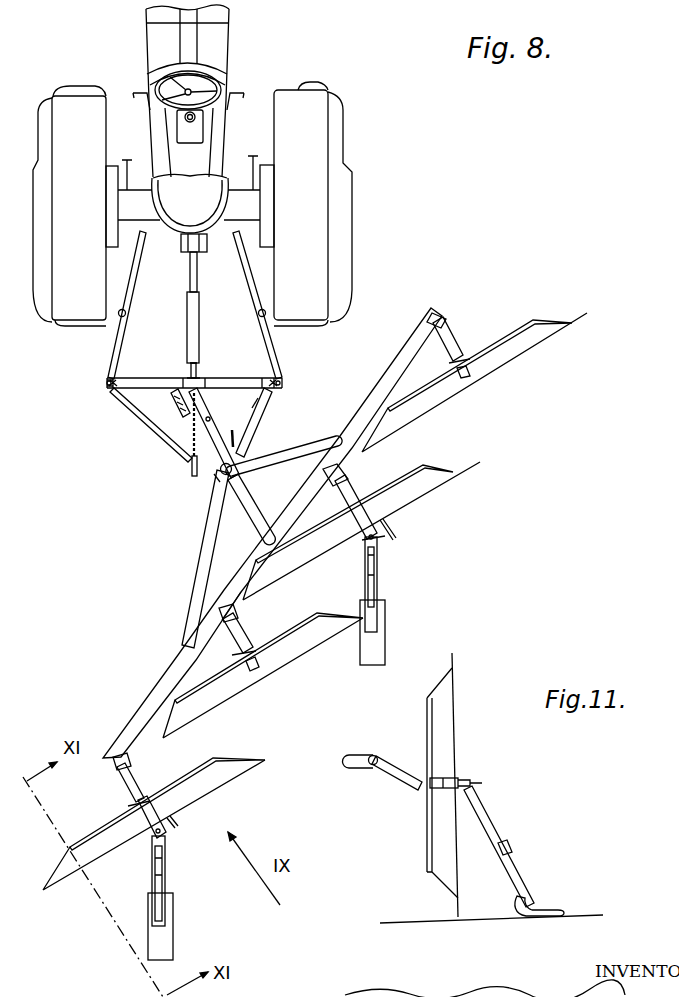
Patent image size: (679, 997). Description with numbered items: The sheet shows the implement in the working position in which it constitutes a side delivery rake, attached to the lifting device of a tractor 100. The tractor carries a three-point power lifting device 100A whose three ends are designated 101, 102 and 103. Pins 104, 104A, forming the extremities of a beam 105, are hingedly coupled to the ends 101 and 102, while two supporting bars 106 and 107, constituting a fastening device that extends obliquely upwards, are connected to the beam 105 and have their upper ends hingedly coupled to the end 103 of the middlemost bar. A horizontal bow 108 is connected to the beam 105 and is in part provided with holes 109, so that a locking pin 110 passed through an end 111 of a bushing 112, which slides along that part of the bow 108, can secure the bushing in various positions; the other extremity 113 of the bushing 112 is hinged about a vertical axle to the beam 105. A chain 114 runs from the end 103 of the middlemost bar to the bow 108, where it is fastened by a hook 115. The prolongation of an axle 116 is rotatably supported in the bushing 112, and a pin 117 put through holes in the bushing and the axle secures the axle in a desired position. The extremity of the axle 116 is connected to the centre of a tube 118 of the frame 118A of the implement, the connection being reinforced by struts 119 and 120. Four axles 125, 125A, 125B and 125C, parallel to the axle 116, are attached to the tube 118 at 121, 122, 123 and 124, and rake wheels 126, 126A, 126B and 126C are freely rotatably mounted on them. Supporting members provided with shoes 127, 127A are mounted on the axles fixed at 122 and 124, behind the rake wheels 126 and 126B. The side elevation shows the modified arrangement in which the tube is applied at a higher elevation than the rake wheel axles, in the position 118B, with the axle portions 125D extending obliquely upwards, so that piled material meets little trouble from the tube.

In FIG. 8, the tractor 100 is at (214, 42).
In FIG. 8, the three-point power lifting device 100A is at (184, 319).
In FIG. 8, the end of lifting device 101 is at (107, 390).
In FIG. 8, the end of lifting device 102 is at (283, 388).
In FIG. 8, the end of middlemost bar 103 is at (200, 366).
In FIG. 8, the pin 104 is at (106, 382).
In FIG. 8, the pin 104A is at (284, 380).
In FIG. 8, the beam 105 is at (112, 378).
In FIG. 8, the supporting bar 106 is at (172, 383).
In FIG. 8, the supporting bar 107 is at (214, 416).
In FIG. 8, the horizontal bow 108 is at (150, 424).
In FIG. 8, the holes 109 is at (237, 441).
In FIG. 8, the locking pin 110 is at (262, 396).
In FIG. 8, the end of bushing 111 is at (216, 480).
In FIG. 8, the bushing 112 is at (210, 420).
In FIG. 8, the extremity of bushing 113 is at (177, 398).
In FIG. 8, the chain 114 is at (190, 466).
In FIG. 8, the hook 115 is at (212, 474).
In FIG. 8, the axle 116 is at (250, 492).
In FIG. 8, the pin 117 is at (193, 410).
In FIG. 8, the tube 118 is at (412, 346).
In FIG. 8, the frame 118A is at (250, 566).
In FIG. 8, the strut 119 is at (199, 548).
In FIG. 8, the strut 120 is at (306, 455).
In FIG. 8, the attachment point 121 is at (446, 318).
In FIG. 8, the attachment point 122 is at (344, 468).
In FIG. 8, the attachment point 123 is at (236, 612).
In FIG. 8, the attachment point 124 is at (130, 758).
In FIG. 8, the axle 125 is at (134, 774).
In FIG. 8, the axle 125A is at (236, 628).
In FIG. 8, the axle 125B is at (333, 506).
In FIG. 8, the axle 125C is at (452, 333).
In FIG. 11, the rake bar arm clamp 125D is at (402, 766).
In FIG. 8, the rake wheel 126 is at (216, 778).
In FIG. 11, the rake wheel 126 is at (447, 712).
In FIG. 8, the rake wheel 126A is at (292, 652).
In FIG. 8, the rake wheel 126B is at (437, 492).
In FIG. 8, the rake wheel 126C is at (533, 347).
In FIG. 8, the shoe 127 is at (174, 932).
In FIG. 11, the shoe 127 is at (545, 918).
In FIG. 8, the shoe 127A is at (386, 640).
In FIG. 11, the tube position 118B is at (358, 770).